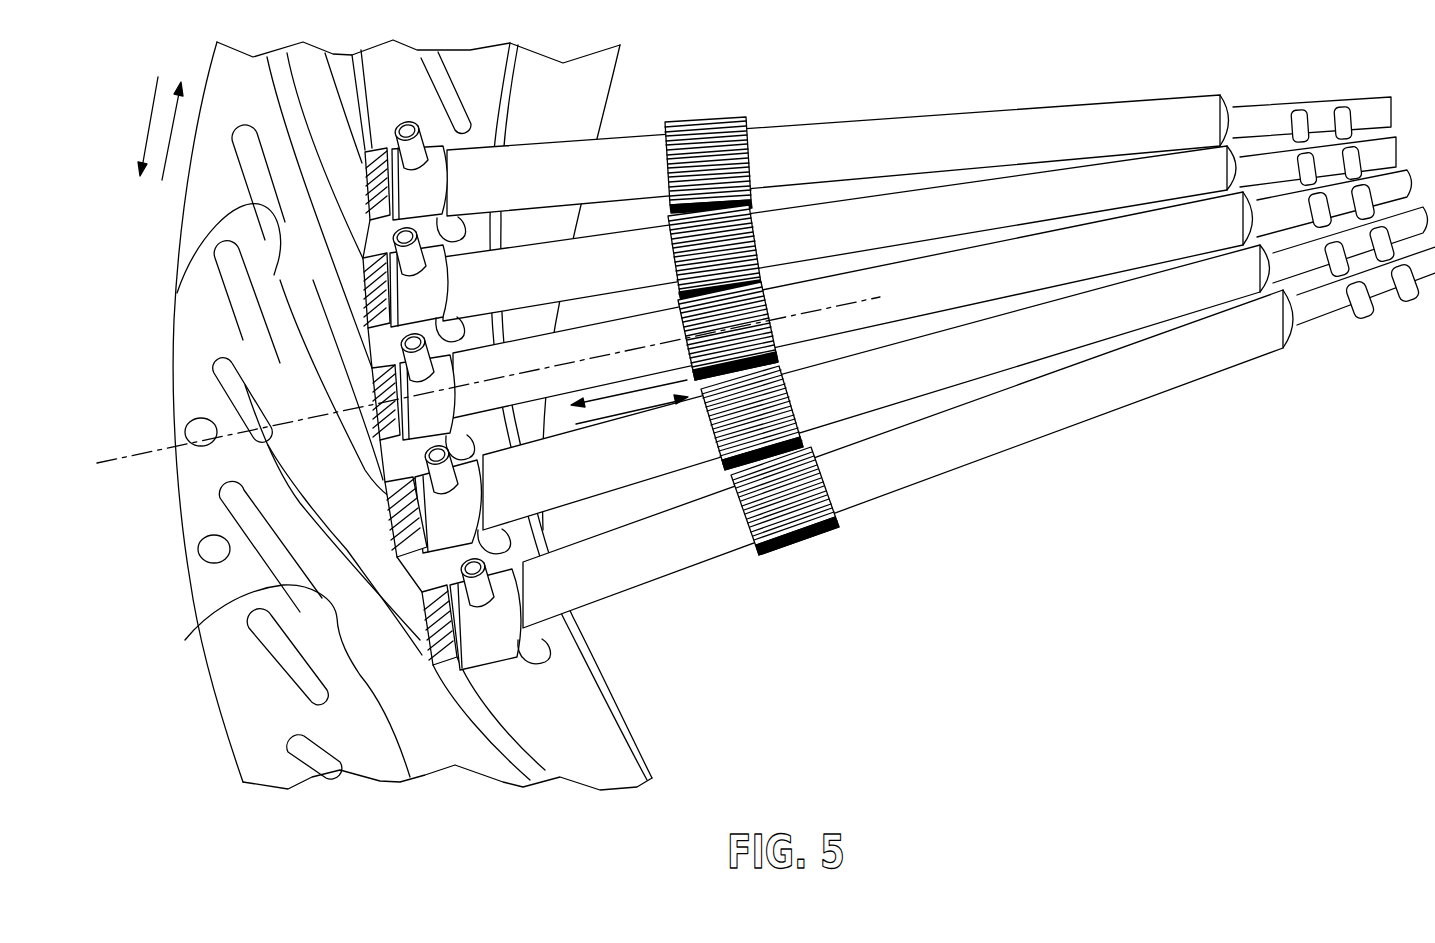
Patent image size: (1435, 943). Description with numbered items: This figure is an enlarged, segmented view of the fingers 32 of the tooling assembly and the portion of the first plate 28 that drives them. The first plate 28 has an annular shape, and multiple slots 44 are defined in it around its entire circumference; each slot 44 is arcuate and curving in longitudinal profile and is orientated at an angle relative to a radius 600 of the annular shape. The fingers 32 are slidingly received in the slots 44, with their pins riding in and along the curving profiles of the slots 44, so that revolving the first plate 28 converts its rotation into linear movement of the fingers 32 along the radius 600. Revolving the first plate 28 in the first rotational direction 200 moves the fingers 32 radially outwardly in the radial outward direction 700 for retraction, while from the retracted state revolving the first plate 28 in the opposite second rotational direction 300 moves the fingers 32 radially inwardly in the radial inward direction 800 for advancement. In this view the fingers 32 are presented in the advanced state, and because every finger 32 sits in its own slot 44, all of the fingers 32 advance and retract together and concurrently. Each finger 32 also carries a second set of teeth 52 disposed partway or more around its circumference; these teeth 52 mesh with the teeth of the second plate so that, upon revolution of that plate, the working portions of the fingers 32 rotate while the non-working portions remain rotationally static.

The first plate 28 is at (634, 730).
The fingers 32 is at (588, 230).
The slots 44 is at (273, 365).
The second set of teeth 52 is at (722, 162).
The first rotational direction 200 is at (140, 125).
The second rotational direction 300 is at (180, 115).
The radius 600 is at (653, 348).
The radial outward direction 700 is at (615, 405).
The radial inward direction 800 is at (622, 410).